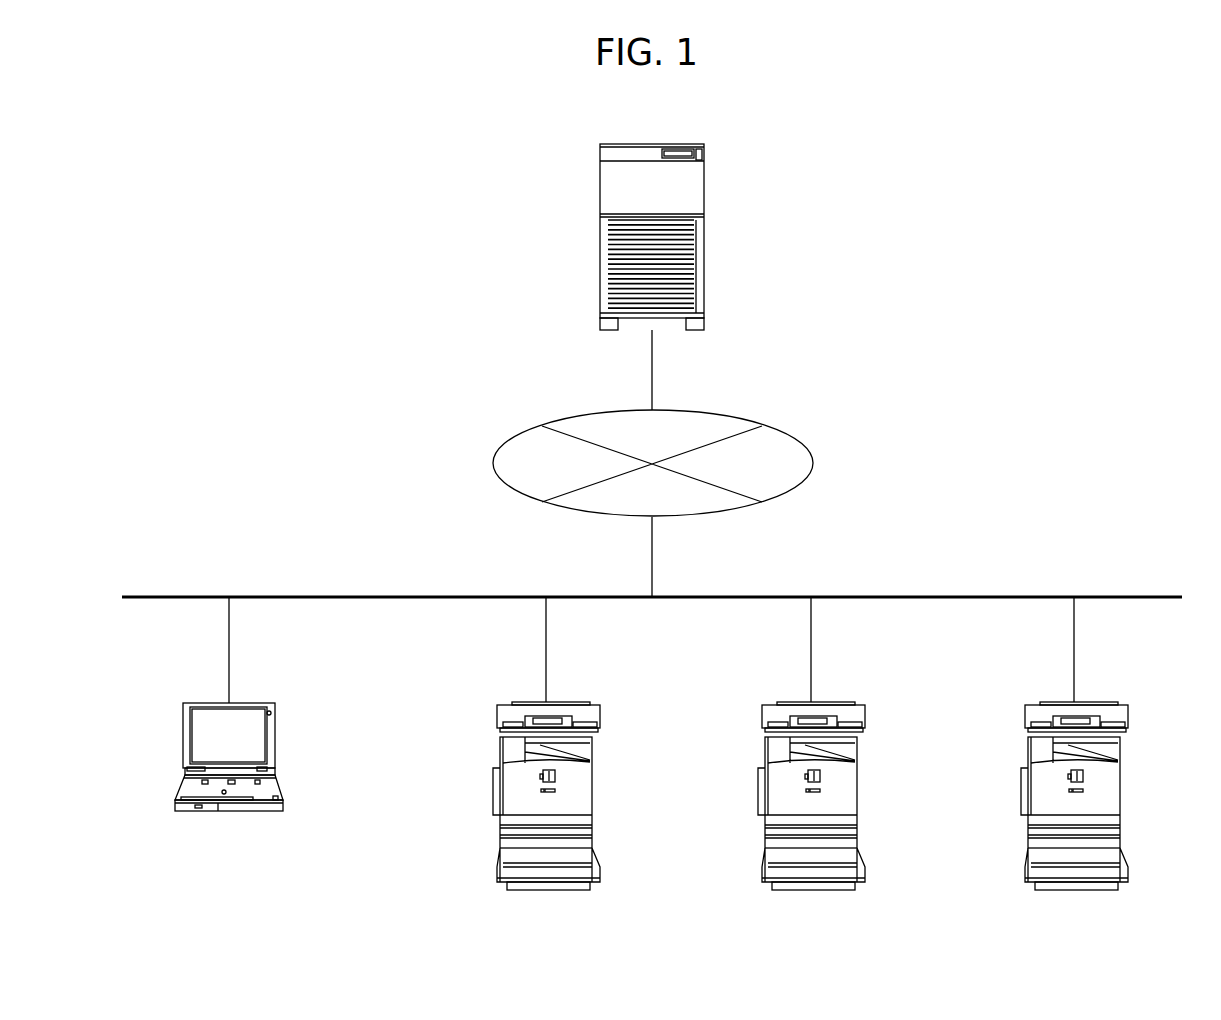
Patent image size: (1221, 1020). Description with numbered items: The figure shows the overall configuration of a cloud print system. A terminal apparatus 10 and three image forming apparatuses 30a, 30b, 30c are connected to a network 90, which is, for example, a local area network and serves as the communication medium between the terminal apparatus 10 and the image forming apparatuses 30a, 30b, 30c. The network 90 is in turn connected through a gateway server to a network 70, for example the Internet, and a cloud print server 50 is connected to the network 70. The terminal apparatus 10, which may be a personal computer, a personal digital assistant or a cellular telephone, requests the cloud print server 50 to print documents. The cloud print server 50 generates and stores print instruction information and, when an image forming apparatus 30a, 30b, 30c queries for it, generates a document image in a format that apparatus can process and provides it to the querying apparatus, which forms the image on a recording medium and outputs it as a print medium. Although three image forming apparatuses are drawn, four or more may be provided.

The terminal apparatus 10 is at (259, 702).
The image forming apparatus 30a is at (577, 703).
The image forming apparatus 30b is at (842, 703).
The image forming apparatus 30c is at (1105, 703).
The cloud print server 50 is at (705, 200).
The network 70 is at (730, 413).
The network 90 is at (1133, 596).